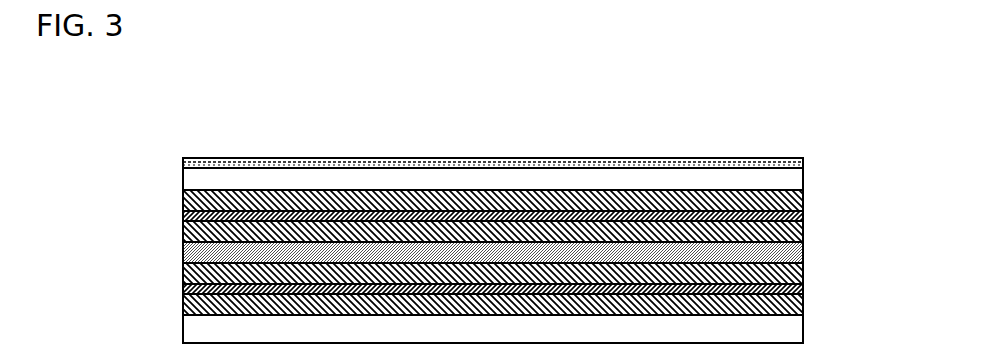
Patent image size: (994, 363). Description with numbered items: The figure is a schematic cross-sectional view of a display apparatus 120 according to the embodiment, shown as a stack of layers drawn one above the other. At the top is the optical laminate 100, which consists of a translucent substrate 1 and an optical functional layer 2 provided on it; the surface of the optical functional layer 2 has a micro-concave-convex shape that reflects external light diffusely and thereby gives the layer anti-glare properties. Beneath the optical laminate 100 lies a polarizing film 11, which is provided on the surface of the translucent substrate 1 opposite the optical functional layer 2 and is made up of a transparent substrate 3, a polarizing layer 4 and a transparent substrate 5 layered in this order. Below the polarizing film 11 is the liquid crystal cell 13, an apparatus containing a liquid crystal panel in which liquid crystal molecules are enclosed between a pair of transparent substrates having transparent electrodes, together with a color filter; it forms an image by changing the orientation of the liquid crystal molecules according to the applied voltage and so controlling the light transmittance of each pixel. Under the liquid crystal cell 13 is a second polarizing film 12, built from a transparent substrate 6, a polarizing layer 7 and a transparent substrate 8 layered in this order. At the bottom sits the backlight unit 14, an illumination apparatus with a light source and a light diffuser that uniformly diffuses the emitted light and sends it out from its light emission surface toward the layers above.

The display apparatus 120 is at (185, 142).
The optical laminate 100 is at (918, 142).
The optical functional layer 2 is at (795, 150).
The translucent substrate 1 is at (795, 170).
The polarizing film 11 is at (861, 165).
The transparent substrate 3 is at (795, 190).
The polarizing layer 4 is at (795, 207).
The transparent substrate 5 is at (795, 223).
The liquid crystal cell 13 is at (177, 247).
The polarizing film 12 is at (861, 248).
The transparent substrate 6 is at (795, 264).
The polarizing layer 7 is at (795, 278).
The transparent substrate 8 is at (795, 297).
The backlight unit 14 is at (180, 325).